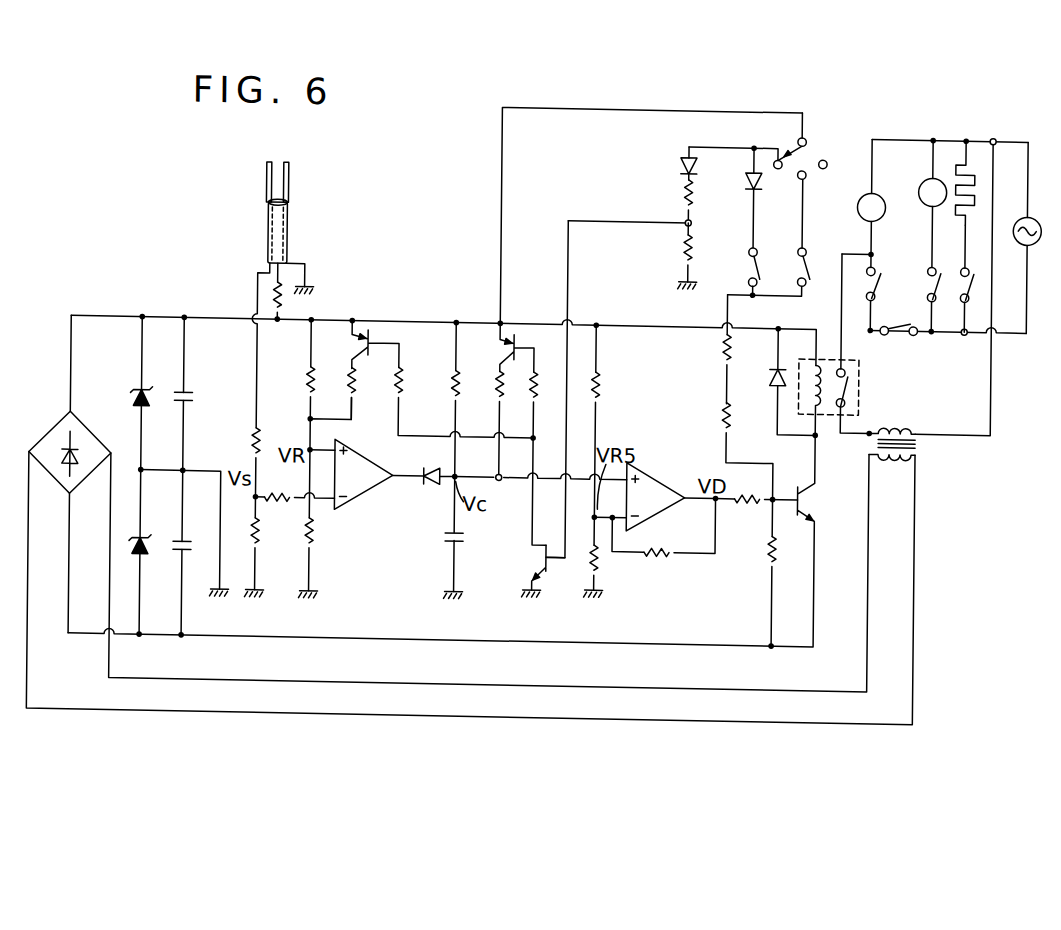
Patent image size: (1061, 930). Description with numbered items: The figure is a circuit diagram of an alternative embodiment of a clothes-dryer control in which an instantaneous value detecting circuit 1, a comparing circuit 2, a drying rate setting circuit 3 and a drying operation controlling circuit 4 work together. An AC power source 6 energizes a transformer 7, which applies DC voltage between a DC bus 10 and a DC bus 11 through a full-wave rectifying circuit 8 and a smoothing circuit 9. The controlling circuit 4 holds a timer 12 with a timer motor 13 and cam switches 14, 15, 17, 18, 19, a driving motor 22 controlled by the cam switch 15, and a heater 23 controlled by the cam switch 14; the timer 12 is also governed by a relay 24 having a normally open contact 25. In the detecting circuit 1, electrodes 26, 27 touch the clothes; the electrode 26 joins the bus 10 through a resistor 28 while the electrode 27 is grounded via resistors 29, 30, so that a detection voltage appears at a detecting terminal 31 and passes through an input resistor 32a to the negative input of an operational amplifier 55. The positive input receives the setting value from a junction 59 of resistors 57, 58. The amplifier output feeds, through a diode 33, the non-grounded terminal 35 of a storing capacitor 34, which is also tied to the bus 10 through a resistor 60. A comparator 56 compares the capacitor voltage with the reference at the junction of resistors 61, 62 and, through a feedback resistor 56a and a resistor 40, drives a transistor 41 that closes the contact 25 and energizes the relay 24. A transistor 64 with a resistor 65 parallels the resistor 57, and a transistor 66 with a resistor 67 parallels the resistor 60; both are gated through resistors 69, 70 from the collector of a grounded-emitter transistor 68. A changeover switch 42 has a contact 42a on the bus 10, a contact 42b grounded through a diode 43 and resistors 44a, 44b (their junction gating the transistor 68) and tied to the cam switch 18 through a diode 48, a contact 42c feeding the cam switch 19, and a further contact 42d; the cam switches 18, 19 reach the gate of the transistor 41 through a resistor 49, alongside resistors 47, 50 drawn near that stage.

The instantaneous value detecting circuit 1 is at (310, 238).
The comparing circuit 2 is at (495, 630).
The drying rate setting circuit 3 is at (723, 232).
The drying operation controlling circuit 4 is at (938, 378).
The AC power source 6 is at (1034, 234).
The transformer 7 is at (918, 444).
The full-wave rectifying circuit 8 is at (88, 448).
The smoothing circuit 9 is at (146, 475).
The DC bus 10 is at (232, 326).
The DC bus 11 is at (358, 640).
The timer 12 is at (874, 250).
The timer motor 13 is at (882, 208).
The cam switch 14 is at (962, 268).
The cam switch 15 is at (926, 270).
The cam switch 17 is at (865, 270).
The cam switch 18 is at (768, 257).
The cam switch 19 is at (806, 262).
The driving motor 22 is at (919, 180).
The heater 23 is at (968, 175).
The relay 24 is at (806, 366).
The normally open contact 25 is at (850, 385).
The electrode 26 is at (287, 172).
The electrode 27 is at (263, 172).
The resistor 28 is at (281, 306).
The resistor 29 is at (253, 448).
The resistor 30 is at (260, 552).
The instantaneous value detecting terminal 31 is at (253, 503).
The input resistor 32a is at (280, 507).
The diode 33 is at (432, 470).
The capacitor 34 is at (446, 539).
The non-grounded terminal 35 is at (453, 482).
The resistor 40 is at (750, 500).
The transistor 41 is at (806, 497).
The changeover switch 42 is at (776, 123).
The contact 42a is at (804, 134).
The contact 42b is at (776, 166).
The contact 42c is at (804, 172).
The contact 42d is at (823, 158).
The diode 43 is at (677, 165).
The resistor 44a is at (681, 192).
The resistor 44b is at (681, 250).
The resistor 47 is at (723, 348).
The diode 48 is at (744, 182).
The resistor 49 is at (722, 416).
The resistor 50 is at (777, 542).
The operational amplifier 55 is at (378, 465).
The comparator 56 is at (664, 474).
The feedback resistor 56a is at (660, 556).
The resistor 57 is at (306, 386).
The resistor 58 is at (313, 552).
The junction 59 is at (307, 425).
The resistor 60 is at (459, 398).
The resistor 61 is at (596, 386).
The resistor 62 is at (597, 560).
The transistor 64 is at (364, 340).
The resistor 65 is at (353, 400).
The transistor 66 is at (510, 338).
The resistor 67 is at (500, 400).
The transistor 68 is at (543, 557).
The resistor 69 is at (400, 400).
The resistor 70 is at (535, 400).